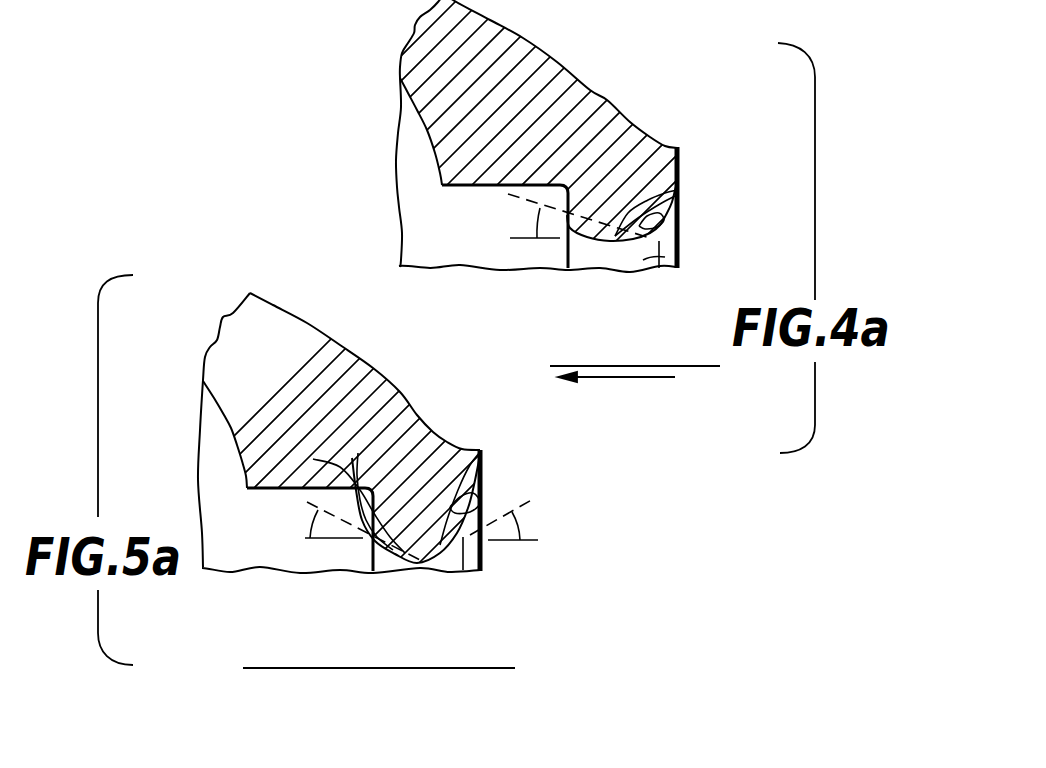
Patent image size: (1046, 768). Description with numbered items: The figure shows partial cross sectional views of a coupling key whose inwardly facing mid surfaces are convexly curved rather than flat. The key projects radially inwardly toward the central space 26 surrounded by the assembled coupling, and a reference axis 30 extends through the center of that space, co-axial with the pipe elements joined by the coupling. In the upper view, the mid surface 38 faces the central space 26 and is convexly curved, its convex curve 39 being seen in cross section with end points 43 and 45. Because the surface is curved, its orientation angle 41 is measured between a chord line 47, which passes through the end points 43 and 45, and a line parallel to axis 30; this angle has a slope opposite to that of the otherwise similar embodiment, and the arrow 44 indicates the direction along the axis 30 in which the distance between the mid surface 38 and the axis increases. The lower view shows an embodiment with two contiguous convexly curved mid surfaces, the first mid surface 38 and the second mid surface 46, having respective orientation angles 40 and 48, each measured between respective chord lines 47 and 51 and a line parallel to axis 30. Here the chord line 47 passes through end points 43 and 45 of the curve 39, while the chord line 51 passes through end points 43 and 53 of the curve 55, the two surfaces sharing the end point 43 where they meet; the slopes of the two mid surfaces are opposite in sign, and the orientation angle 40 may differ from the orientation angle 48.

In FIG. 4A, the central space 26 is at (441, 324).
In FIG. 5A, the central space 26 is at (231, 632).
In FIG. 4A, the reference axis 30 is at (705, 367).
In FIG. 5A, the reference axis 30 is at (470, 669).
In FIG. 4A, the mid surface 38 is at (665, 257).
In FIG. 5A, the mid surface 38 is at (445, 565).
In FIG. 4A, the convex curve 39 is at (673, 194).
In FIG. 5A, the convex curve 39 is at (440, 563).
In FIG. 5A, the orientation angle 40 is at (518, 515).
In FIG. 4A, the orientation angle 41 is at (538, 224).
In FIG. 4A, the end point 43 is at (597, 268).
In FIG. 5A, the end point 43 is at (422, 566).
In FIG. 4A, the arrow 44 is at (618, 378).
In FIG. 4A, the end point 45 is at (679, 233).
In FIG. 5A, the end point 45 is at (462, 508).
In FIG. 5A, the second mid surface 46 is at (392, 558).
In FIG. 4A, the chord line 47 is at (679, 228).
In FIG. 5A, the chord line 47 is at (478, 454).
In FIG. 5A, the orientation angle 48 is at (306, 536).
In FIG. 5A, the chord line 51 is at (369, 486).
In FIG. 5A, the end point 53 is at (341, 496).
In FIG. 5A, the curve 55 is at (393, 565).